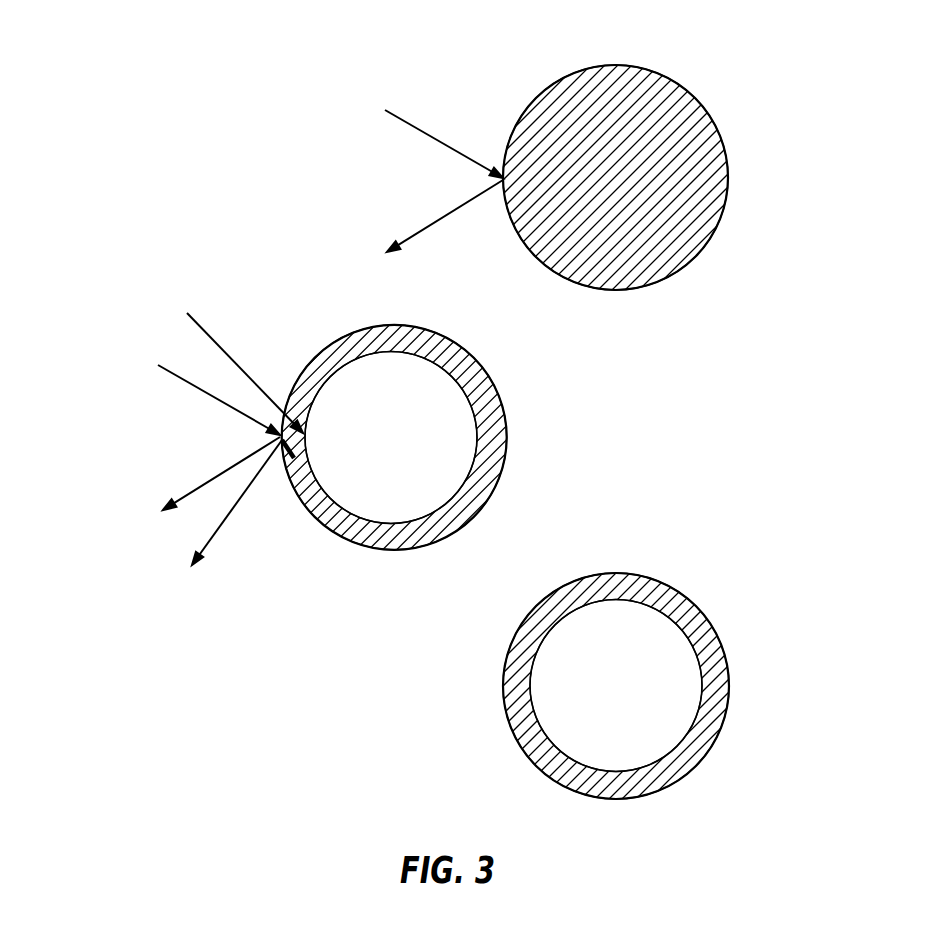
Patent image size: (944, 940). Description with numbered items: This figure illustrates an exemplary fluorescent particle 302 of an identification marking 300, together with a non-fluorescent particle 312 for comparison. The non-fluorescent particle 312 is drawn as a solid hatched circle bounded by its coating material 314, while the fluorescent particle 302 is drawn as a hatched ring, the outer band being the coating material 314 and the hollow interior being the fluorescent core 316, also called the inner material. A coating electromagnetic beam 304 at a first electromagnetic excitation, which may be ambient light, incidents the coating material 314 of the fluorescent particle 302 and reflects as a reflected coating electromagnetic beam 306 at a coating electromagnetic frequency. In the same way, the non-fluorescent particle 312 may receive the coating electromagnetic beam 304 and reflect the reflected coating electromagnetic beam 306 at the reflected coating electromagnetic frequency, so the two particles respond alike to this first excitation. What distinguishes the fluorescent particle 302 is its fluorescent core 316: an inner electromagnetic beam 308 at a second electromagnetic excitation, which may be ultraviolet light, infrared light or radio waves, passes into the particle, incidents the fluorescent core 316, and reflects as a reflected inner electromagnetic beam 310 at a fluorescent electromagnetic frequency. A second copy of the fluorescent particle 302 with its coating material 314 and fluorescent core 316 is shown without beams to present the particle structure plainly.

The identification marking 300 is at (126, 37).
The fluorescent particle 302 is at (524, 358).
The coating electromagnetic beam 304 is at (309, 266).
The reflected coating electromagnetic beam 306 is at (312, 354).
The inner electromagnetic beam 308 is at (233, 361).
The reflected inner electromagnetic beam 310 is at (228, 517).
The non-fluorescent particle 312 is at (726, 63).
The coating material 314 is at (630, 63).
The fluorescent core 316 is at (419, 522).